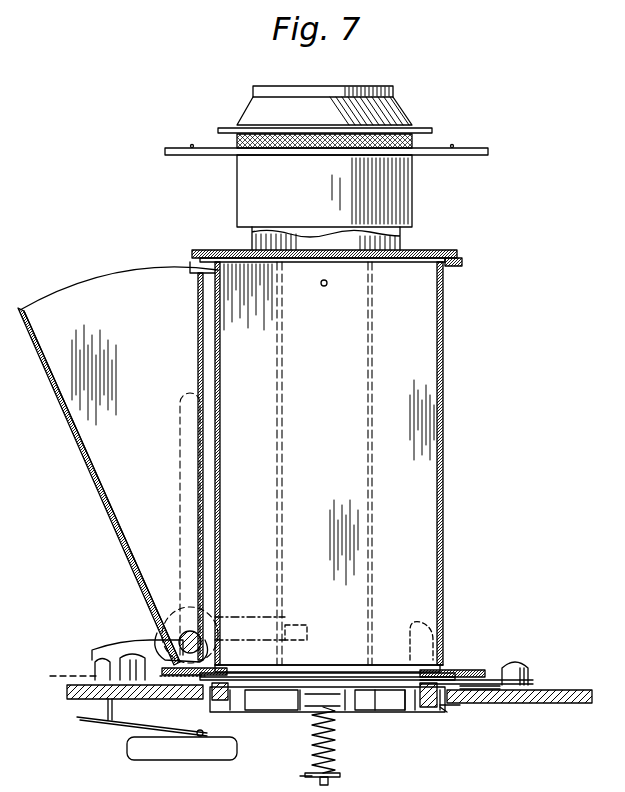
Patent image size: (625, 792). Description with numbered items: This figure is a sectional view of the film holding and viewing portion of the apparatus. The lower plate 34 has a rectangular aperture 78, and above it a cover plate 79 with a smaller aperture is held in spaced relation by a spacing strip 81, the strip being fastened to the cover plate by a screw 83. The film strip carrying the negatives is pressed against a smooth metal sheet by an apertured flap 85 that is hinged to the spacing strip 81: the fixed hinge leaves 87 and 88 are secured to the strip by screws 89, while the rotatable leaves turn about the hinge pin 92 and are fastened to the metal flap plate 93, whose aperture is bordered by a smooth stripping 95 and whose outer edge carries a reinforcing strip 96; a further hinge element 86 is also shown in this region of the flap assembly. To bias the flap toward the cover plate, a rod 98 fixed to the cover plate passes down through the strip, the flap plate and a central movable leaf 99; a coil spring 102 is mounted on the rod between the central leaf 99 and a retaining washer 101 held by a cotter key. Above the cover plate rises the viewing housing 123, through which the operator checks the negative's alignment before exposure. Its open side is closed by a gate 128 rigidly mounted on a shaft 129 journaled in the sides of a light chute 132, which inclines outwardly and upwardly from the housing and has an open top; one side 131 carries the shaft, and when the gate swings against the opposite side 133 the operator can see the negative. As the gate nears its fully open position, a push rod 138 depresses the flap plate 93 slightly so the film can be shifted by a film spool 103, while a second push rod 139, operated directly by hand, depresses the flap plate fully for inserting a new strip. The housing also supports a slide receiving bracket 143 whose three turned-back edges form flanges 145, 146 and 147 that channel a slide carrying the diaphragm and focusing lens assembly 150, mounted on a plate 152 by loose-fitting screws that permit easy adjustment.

The lower plate 34 is at (578, 686).
The rectangular aperture 78 is at (445, 707).
The cover plate 79 is at (480, 655).
The spacing strip 81 is at (503, 650).
The screw 83 is at (462, 640).
The apertured flap 85 is at (430, 707).
The member 86 is at (362, 712).
The fixed hinge leaf 87 is at (262, 712).
The fixed hinge leaf 88 is at (398, 712).
The screws 89 is at (378, 712).
The hinge pin 92 is at (205, 706).
The metal plate 93 is at (235, 712).
The stripping 95 is at (213, 712).
The reinforcing strip 96 is at (425, 712).
The rod 98 is at (335, 783).
The central movable leaf 99 is at (305, 712).
The retaining washer 101 is at (300, 778).
The coil spring 102 is at (335, 750).
The film spool 103 is at (250, 786).
The viewing housing 123 is at (441, 437).
The gate 128 is at (198, 310).
The shaft 129 is at (160, 628).
The side of light chute 131 is at (123, 262).
The light chute 132 is at (80, 452).
The side of light chute 133 is at (83, 455).
The push rod 138 is at (242, 632).
The second push rod 139 is at (410, 624).
The slide receiving bracket 143 is at (425, 257).
The flange 145 is at (338, 262).
The flange 146 is at (458, 252).
The flange 147 is at (207, 250).
The diaphragm and focusing lens assembly 150 is at (405, 118).
The plate 152 is at (410, 260).